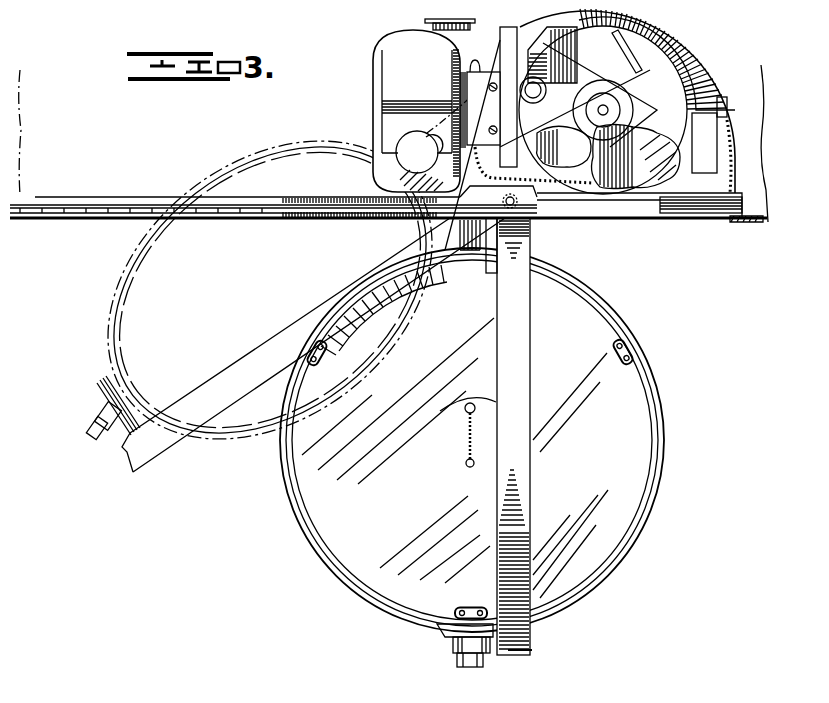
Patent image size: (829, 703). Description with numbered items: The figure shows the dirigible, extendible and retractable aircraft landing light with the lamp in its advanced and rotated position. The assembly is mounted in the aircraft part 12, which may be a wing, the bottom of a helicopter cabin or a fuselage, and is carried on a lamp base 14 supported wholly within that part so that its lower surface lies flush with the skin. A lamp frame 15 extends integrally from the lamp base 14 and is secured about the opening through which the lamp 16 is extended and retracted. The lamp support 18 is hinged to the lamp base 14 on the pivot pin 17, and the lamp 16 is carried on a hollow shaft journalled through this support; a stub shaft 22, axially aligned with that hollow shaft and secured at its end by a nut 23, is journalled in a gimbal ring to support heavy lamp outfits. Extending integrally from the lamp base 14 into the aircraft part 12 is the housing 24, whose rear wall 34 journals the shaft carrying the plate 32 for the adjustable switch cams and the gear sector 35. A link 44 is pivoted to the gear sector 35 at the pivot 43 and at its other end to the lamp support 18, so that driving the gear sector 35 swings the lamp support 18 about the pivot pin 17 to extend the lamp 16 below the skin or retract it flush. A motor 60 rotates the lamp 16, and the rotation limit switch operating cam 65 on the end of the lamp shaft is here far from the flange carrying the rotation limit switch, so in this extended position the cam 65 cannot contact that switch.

The aircraft part 12 is at (20, 132).
The lamp base 14 is at (644, 212).
The lamp frame 15 is at (520, 273).
The lamp 16 is at (145, 318).
The pivot pin 17 is at (518, 204).
The lamp support 18 is at (474, 45).
The stub shaft 22 is at (93, 440).
The nut 23 is at (92, 418).
The housing 24 is at (705, 65).
The plate 32 is at (584, 106).
The rear wall 34 is at (658, 50).
The gear sector 35 is at (662, 136).
The pivot 43 is at (542, 92).
The link 44 is at (564, 146).
The motor 60 is at (393, 48).
The rotation limit switch operating cam 65 is at (442, 21).